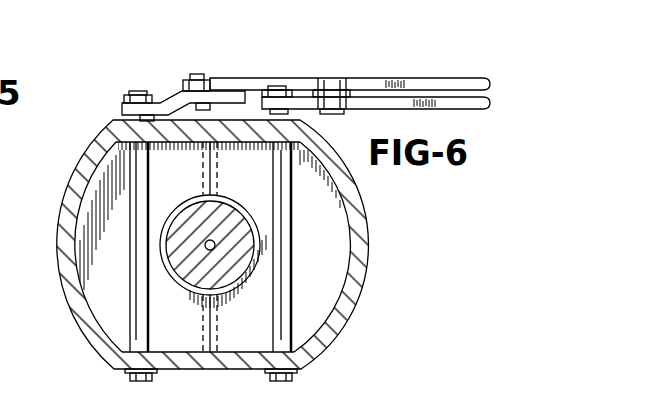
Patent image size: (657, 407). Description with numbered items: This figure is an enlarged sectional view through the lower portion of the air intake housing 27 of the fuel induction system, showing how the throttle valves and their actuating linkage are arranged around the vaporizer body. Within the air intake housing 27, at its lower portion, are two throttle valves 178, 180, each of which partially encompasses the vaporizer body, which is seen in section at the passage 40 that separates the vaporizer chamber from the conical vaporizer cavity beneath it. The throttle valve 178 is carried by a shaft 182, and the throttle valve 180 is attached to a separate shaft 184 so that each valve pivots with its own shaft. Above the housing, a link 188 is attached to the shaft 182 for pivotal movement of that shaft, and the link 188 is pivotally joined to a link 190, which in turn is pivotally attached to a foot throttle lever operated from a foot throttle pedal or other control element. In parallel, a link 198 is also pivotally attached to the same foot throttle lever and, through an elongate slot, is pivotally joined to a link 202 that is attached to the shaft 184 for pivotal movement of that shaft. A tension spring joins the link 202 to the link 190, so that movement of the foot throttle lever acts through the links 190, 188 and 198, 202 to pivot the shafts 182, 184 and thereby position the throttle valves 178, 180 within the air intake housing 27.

The air intake housing 27 is at (62, 261).
The passage 40 is at (209, 240).
The throttle valve 178 is at (92, 193).
The throttle valve 180 is at (328, 204).
The shaft 182 is at (136, 262).
The shaft 184 is at (284, 264).
The link 188 is at (165, 93).
The link 190 is at (389, 78).
The link 198 is at (450, 99).
The link 202 is at (306, 110).